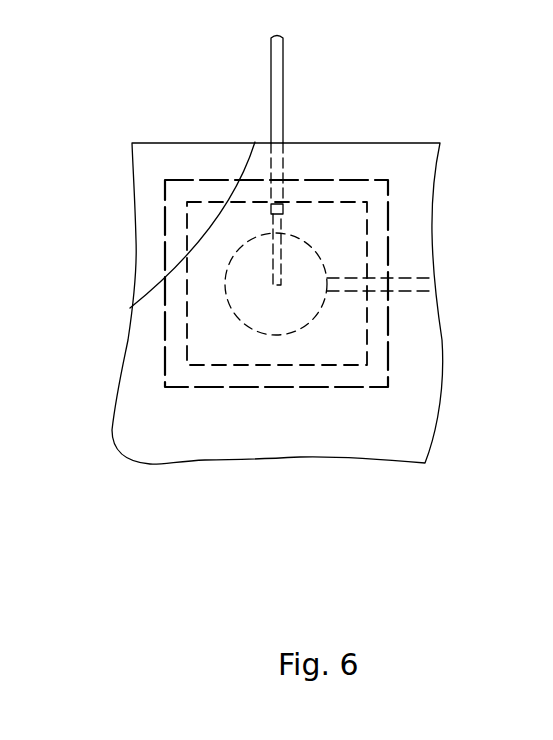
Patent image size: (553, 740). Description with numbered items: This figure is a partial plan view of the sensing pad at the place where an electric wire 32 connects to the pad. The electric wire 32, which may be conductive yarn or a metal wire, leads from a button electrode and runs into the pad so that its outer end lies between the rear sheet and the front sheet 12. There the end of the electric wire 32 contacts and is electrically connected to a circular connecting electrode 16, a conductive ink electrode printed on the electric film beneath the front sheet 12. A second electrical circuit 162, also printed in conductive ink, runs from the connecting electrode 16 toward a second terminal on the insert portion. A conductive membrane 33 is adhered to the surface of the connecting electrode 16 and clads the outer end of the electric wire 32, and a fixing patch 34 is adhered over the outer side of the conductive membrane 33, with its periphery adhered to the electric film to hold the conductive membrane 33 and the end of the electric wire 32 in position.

The front sheet 12 is at (182, 442).
The connecting electrode 16 is at (290, 337).
The second electrical circuit 162 is at (412, 290).
The electric wire 32 is at (282, 254).
The conductive membrane 33 is at (187, 242).
The fixing patch 34 is at (178, 187).